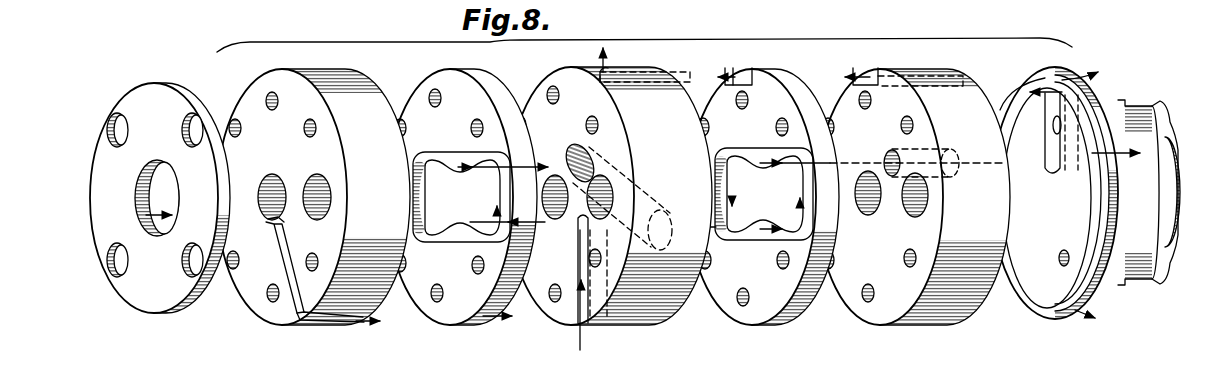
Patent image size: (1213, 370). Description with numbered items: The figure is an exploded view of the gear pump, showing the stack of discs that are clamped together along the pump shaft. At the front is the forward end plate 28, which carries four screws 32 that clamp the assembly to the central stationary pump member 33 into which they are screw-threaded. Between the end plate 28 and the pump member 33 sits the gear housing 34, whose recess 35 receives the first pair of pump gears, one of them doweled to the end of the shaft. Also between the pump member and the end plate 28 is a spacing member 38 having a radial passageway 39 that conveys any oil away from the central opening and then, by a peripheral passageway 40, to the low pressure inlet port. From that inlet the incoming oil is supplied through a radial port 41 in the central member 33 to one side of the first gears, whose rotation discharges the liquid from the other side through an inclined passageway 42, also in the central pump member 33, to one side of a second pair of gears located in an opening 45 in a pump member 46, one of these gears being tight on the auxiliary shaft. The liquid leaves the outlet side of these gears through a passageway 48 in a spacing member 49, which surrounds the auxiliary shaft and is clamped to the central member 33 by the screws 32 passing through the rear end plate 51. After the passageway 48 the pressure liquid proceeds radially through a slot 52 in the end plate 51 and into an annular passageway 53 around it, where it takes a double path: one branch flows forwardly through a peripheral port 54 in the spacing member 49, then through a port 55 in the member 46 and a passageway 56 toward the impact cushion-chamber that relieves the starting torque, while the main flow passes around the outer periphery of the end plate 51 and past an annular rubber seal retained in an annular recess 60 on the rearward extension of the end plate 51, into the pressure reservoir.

The forward end plate 28 is at (156, 95).
The screws 32 is at (113, 272).
The spacing member 38 is at (246, 305).
The radial passageway 39 is at (287, 243).
The peripheral passageway 40 is at (309, 322).
The gear housing 34 is at (425, 312).
The recess 35 is at (461, 241).
The central stationary pump member 33 is at (631, 316).
The radial port 41 is at (575, 312).
The inclined passageway 42 is at (573, 148).
The passageway 56 is at (628, 72).
The pump member 46 is at (735, 312).
The opening 45 is at (858, 211).
The port 55 is at (748, 68).
The spacing member 49 is at (876, 312).
The passageway 48 is at (904, 149).
The peripheral port 54 is at (866, 69).
The rear end plate 51 is at (1040, 316).
The slot 52 is at (1100, 71).
The annular passageway 53 is at (1057, 76).
The annular recess 60 is at (1130, 283).